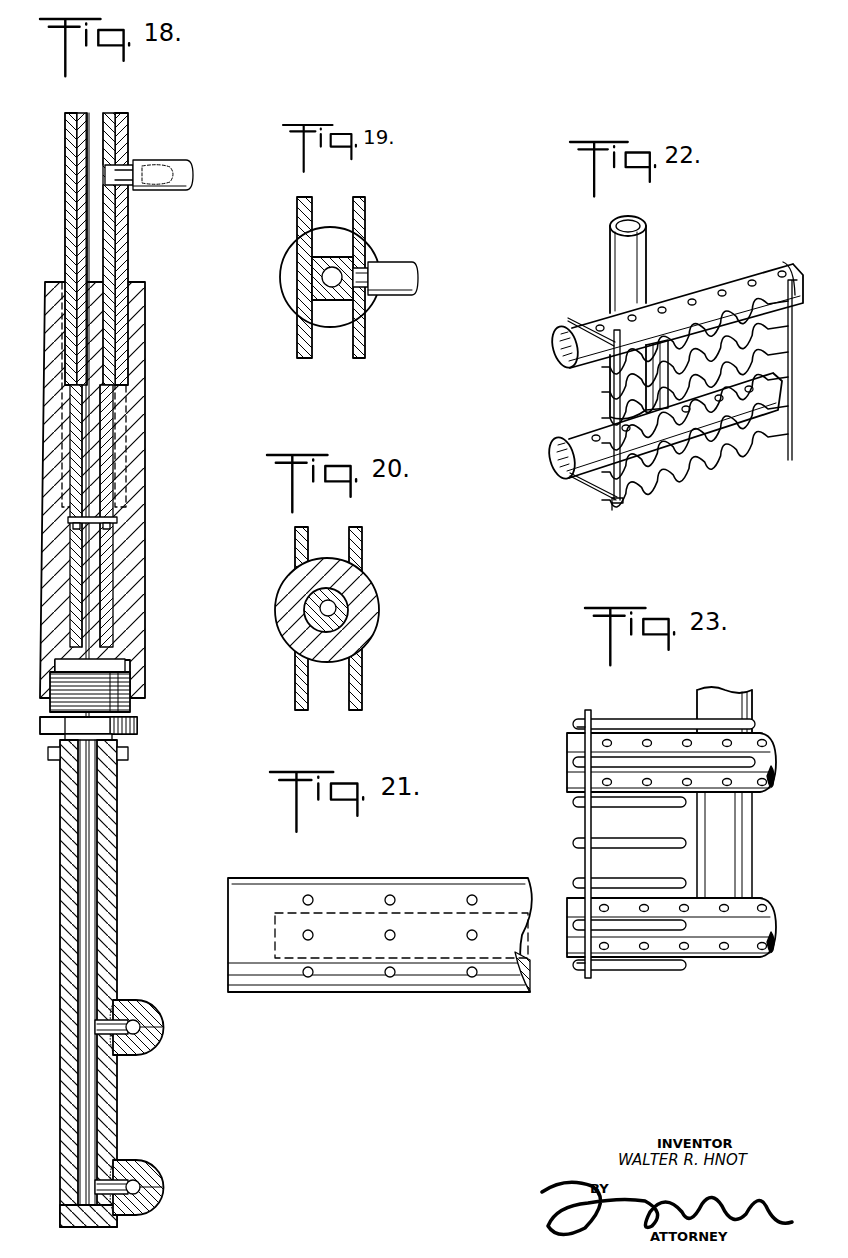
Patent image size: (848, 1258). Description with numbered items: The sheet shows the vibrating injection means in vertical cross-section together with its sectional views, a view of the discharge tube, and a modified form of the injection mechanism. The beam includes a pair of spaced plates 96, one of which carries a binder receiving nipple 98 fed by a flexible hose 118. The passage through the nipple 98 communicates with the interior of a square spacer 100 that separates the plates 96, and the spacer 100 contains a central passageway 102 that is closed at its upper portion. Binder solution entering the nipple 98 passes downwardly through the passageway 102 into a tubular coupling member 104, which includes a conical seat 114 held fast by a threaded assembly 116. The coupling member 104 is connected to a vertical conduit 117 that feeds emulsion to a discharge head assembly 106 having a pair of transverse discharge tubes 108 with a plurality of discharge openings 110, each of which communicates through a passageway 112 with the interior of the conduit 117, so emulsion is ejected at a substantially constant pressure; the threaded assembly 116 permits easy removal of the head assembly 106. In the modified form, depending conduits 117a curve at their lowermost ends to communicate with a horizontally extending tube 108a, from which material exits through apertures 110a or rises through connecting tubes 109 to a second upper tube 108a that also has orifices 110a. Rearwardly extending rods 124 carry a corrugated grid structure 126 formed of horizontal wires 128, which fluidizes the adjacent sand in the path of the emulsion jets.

In FIG. 18, the spaced plates 96 is at (66, 227).
In FIG. 19, the spaced plates 96 is at (352, 345).
In FIG. 20, the spaced plates 96 is at (352, 541).
In FIG. 18, the binder receiving nipple 98 is at (128, 170).
In FIG. 19, the binder receiving nipple 98 is at (364, 273).
In FIG. 18, the square spacer 100 is at (82, 135).
In FIG. 19, the square spacer 100 is at (325, 257).
In FIG. 20, the square spacer 100 is at (372, 580).
In FIG. 18, the central passageway 102 is at (98, 135).
In FIG. 19, the central passageway 102 is at (324, 277).
In FIG. 20, the central passageway 102 is at (318, 605).
In FIG. 18, the tubular coupling member 104 is at (137, 490).
In FIG. 19, the tubular coupling member 104 is at (285, 307).
In FIG. 20, the tubular coupling member 104 is at (380, 612).
In FIG. 18, the discharge head assembly 106 is at (123, 887).
In FIG. 18, the transverse discharge tube 108 is at (128, 1001).
In FIG. 21, the transverse discharge tube 108 is at (283, 879).
In FIG. 22, the horizontally extending tube 108a is at (556, 349).
In FIG. 23, the horizontally extending tube 108a is at (567, 771).
In FIG. 22, the connecting tube 109 is at (666, 353).
In FIG. 23, the connecting tube 109 is at (730, 829).
In FIG. 18, the discharge opening 110 is at (150, 1046).
In FIG. 21, the discharge opening 110 is at (392, 905).
In FIG. 22, the aperture 110a is at (662, 308).
In FIG. 23, the aperture 110a is at (767, 745).
In FIG. 18, the passageway 112 is at (100, 1027).
In FIG. 18, the conical seat 114 is at (120, 592).
In FIG. 18, the threaded assembly 116 is at (122, 688).
In FIG. 18, the vertical conduit 117 is at (118, 800).
In FIG. 22, the depending conduit 117a is at (616, 251).
In FIG. 23, the depending conduit 117a is at (752, 700).
In FIG. 18, the flexible hose 118 is at (168, 160).
In FIG. 19, the flexible hose 118 is at (408, 262).
In FIG. 22, the rearwardly extending rod 124 is at (604, 330).
In FIG. 23, the rearwardly extending rod 124 is at (580, 732).
In FIG. 22, the corrugated grid structure 126 is at (613, 512).
In FIG. 22, the horizontal wire 128 is at (682, 379).
In FIG. 23, the horizontal wire 128 is at (652, 719).